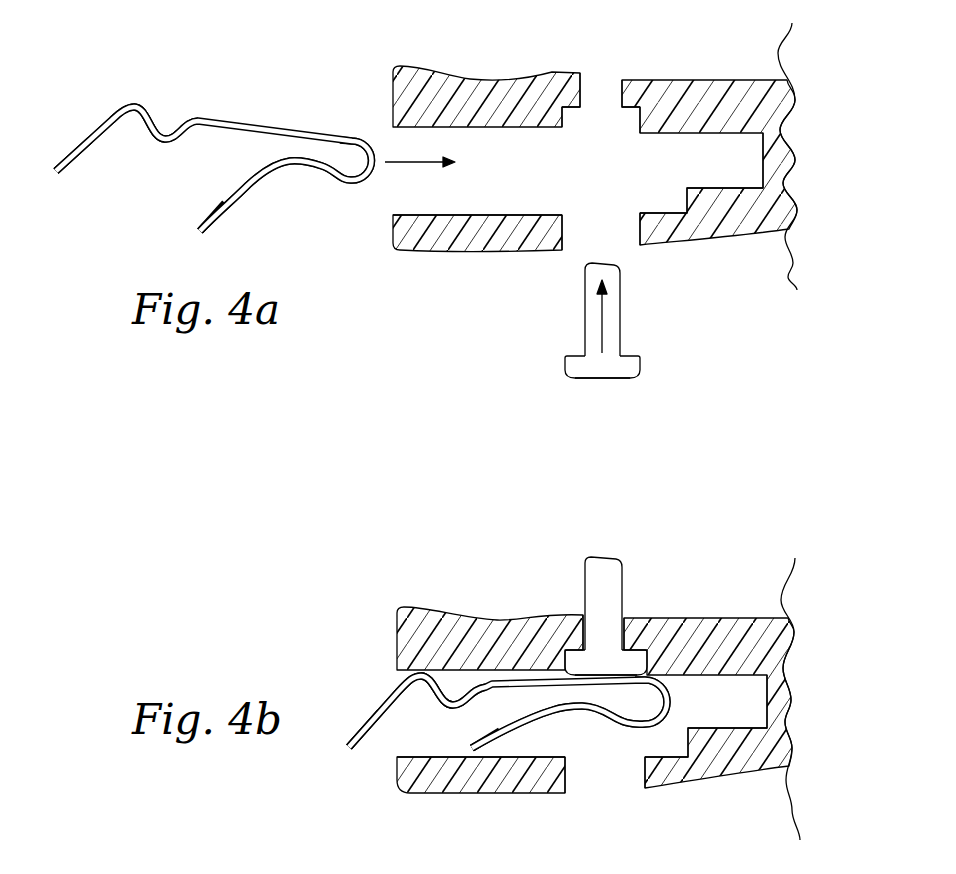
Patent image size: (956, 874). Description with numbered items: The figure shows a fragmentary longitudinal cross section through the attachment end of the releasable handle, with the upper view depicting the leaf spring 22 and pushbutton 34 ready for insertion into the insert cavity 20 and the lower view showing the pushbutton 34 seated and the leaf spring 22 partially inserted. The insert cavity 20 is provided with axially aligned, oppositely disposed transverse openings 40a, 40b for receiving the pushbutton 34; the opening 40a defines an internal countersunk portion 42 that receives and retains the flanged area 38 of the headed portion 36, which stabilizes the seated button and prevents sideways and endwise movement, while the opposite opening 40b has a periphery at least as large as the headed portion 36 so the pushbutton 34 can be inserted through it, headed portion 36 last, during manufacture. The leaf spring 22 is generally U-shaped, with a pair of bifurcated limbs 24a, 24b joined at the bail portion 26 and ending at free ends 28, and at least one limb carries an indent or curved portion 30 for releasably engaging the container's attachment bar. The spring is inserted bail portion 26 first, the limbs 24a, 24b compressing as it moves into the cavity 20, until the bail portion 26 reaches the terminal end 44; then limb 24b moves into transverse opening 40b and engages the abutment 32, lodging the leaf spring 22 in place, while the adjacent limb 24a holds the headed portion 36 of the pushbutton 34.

In FIG. 4A, the insert cavity 20 is at (462, 197).
In FIG. 4B, the insert cavity 20 is at (412, 730).
In FIG. 4A, the leaf spring 22 is at (243, 124).
In FIG. 4B, the leaf spring 22 is at (513, 680).
In FIG. 4A, the bifurcated limb 24a is at (140, 106).
In FIG. 4B, the bifurcated limb 24a is at (424, 672).
In FIG. 4A, the bifurcated limb 24b is at (275, 172).
In FIG. 4B, the bifurcated limb 24b is at (534, 730).
In FIG. 4A, the bail portion 26 is at (371, 178).
In FIG. 4B, the bail portion 26 is at (668, 707).
In FIG. 4A, the free end 28 is at (63, 153).
In FIG. 4B, the free end 28 is at (347, 742).
In FIG. 4A, the indent or curved portion 30 is at (170, 138).
In FIG. 4B, the indent or curved portion 30 is at (455, 708).
In FIG. 4A, the abutment 32 is at (575, 237).
In FIG. 4B, the abutment 32 is at (568, 773).
In FIG. 4A, the pushbutton 34 is at (613, 318).
In FIG. 4B, the pushbutton 34 is at (605, 576).
In FIG. 4A, the headed portion 36 is at (601, 382).
In FIG. 4B, the headed portion 36 is at (600, 670).
In FIG. 4A, the flanged area 38 is at (628, 363).
In FIG. 4B, the flanged area 38 is at (631, 660).
In FIG. 4A, the transverse opening 40a is at (601, 90).
In FIG. 4B, the transverse opening 40a is at (603, 632).
In FIG. 4A, the transverse opening 40b is at (610, 230).
In FIG. 4B, the transverse opening 40b is at (610, 770).
In FIG. 4A, the countersunk portion 42 is at (625, 115).
In FIG. 4A, the terminal end 44 is at (750, 168).
In FIG. 4B, the terminal end 44 is at (755, 707).